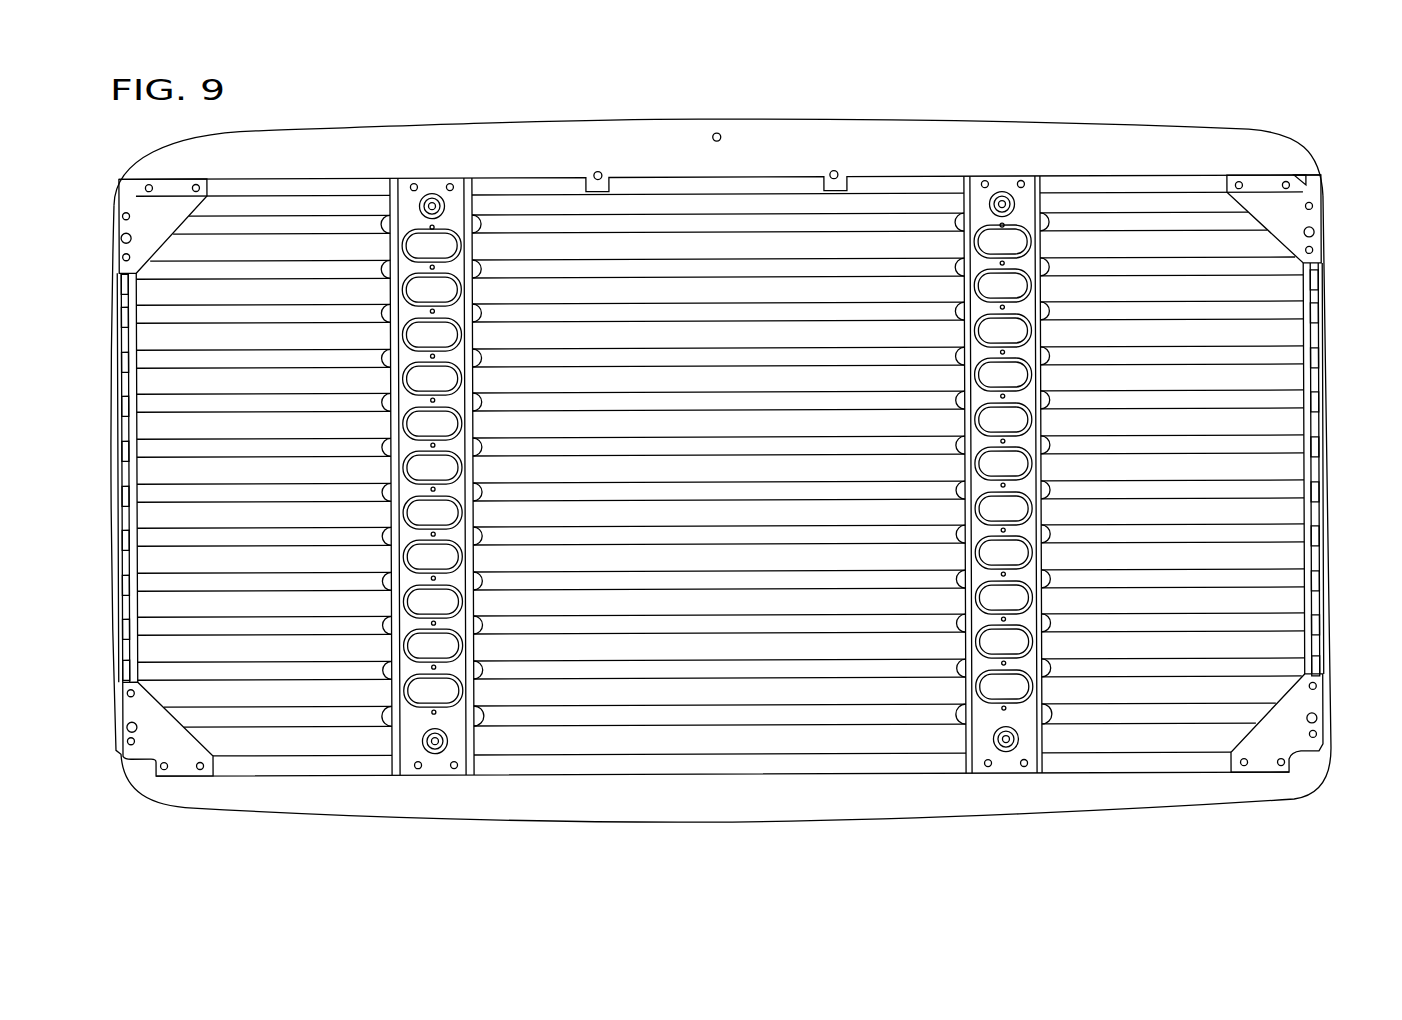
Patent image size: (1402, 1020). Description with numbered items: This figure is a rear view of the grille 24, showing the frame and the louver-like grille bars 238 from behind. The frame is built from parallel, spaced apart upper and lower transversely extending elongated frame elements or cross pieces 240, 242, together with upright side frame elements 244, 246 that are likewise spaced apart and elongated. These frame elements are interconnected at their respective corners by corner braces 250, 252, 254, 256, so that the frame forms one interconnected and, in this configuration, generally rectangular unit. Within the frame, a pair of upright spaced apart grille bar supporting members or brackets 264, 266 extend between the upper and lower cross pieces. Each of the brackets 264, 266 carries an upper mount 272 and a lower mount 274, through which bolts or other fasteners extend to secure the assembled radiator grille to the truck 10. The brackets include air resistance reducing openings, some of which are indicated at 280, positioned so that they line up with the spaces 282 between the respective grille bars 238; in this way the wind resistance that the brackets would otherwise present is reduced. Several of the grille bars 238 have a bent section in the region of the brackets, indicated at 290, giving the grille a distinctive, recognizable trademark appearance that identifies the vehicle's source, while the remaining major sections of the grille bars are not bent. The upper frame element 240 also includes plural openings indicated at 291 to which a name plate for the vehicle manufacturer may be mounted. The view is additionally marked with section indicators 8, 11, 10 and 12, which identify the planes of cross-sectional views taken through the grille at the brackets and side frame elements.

The grille 24 is at (960, 108).
The grille bars 238 is at (893, 313).
The upper frame element 240 is at (589, 139).
The lower frame element 242 is at (601, 808).
The side frame element 244 is at (112, 510).
The side frame element 246 is at (1333, 374).
The corner brace 250 is at (151, 218).
The corner brace 252 is at (1268, 203).
The corner brace 254 is at (1297, 746).
The corner brace 256 is at (175, 758).
The grille bar supporting bracket 264 is at (413, 750).
The grille bar supporting bracket 266 is at (975, 772).
The upper mount 272 is at (428, 200).
The lower mount 274 is at (437, 752).
The air resistance reducing openings 280 is at (447, 287).
The spaces 282 is at (558, 290).
The bent section 290 is at (1055, 262).
The openings 291 is at (834, 173).
The section line 8- 8 is at (462, 109).
The truck 10 is at (1286, 470).
The section line 11- 11 is at (1218, 111).
The section line 12- 12 is at (1032, 711).